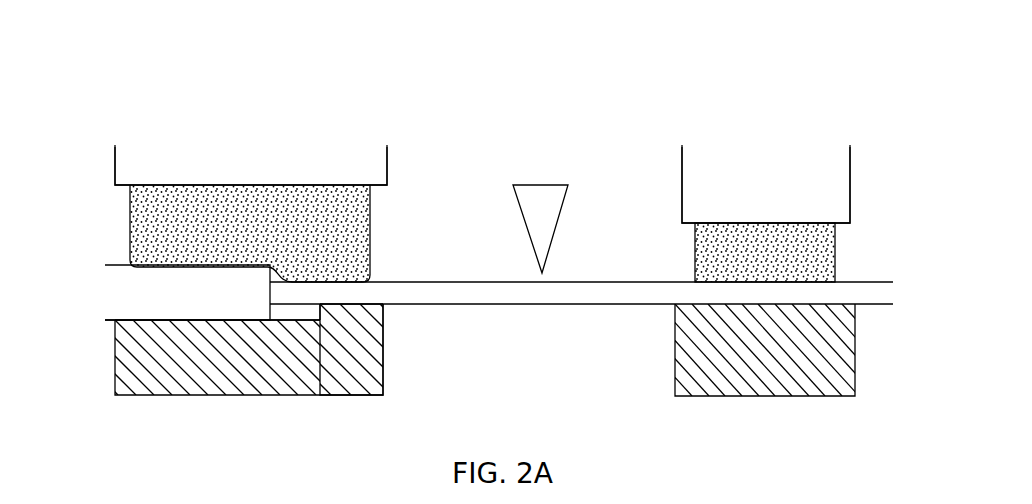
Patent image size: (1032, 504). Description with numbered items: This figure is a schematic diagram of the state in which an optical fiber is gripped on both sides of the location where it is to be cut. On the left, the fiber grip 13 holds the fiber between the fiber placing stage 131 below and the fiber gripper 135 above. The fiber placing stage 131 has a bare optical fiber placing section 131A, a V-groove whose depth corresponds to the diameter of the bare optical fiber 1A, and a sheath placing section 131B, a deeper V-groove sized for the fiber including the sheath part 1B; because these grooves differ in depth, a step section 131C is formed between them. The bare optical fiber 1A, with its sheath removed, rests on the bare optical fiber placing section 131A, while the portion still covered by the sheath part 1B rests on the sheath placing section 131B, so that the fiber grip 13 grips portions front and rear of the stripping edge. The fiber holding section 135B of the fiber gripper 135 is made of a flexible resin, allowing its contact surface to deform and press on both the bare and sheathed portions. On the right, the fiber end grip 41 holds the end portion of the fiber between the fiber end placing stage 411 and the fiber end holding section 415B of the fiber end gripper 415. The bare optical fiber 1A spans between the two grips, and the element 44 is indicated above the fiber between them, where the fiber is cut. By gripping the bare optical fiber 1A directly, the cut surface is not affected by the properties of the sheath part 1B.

The fiber grip 13 is at (400, 158).
The fiber gripper 135 is at (128, 165).
The fiber holding section 135B is at (140, 228).
The sheath part 1B is at (112, 266).
The bare optical fiber 1A is at (428, 281).
The laser beam / irradiation unit 44 is at (542, 193).
The fiber placing stage 131 is at (373, 377).
The bare optical fiber placing section 131A is at (362, 298).
The sheath placing section 131B is at (143, 319).
The step section 131C is at (314, 318).
The fiber end grip 41 is at (860, 167).
The fiber end gripper 415 is at (688, 188).
The fiber end holding section 415B is at (697, 250).
The fiber end placing stage 411 is at (848, 350).